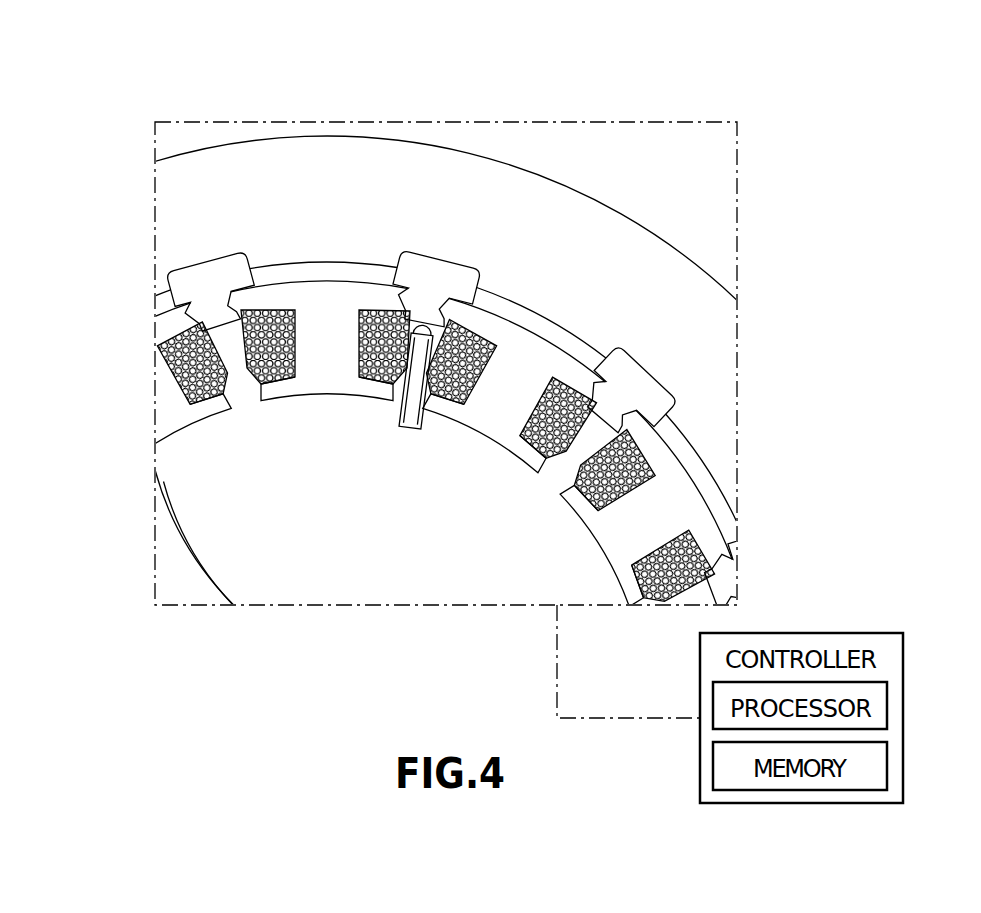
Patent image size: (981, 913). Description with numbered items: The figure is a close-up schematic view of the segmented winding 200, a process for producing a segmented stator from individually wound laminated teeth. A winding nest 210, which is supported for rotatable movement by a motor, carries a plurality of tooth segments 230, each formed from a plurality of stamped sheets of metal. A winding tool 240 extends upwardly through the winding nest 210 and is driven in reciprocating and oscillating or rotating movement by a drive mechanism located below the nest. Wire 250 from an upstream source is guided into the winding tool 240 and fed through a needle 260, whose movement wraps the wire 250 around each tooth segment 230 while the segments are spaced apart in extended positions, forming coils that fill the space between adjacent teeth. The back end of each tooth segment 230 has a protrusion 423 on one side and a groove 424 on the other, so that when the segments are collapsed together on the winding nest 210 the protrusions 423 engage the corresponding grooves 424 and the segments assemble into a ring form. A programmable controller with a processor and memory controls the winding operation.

The segmented winding 200 is at (660, 103).
The winding nest 210 is at (651, 236).
The tooth segment 230 is at (326, 397).
The winding tool 240 is at (244, 582).
The wire 250 is at (469, 321).
The needle 260 is at (411, 430).
The protrusion 423 is at (443, 300).
The groove 424 is at (424, 298).